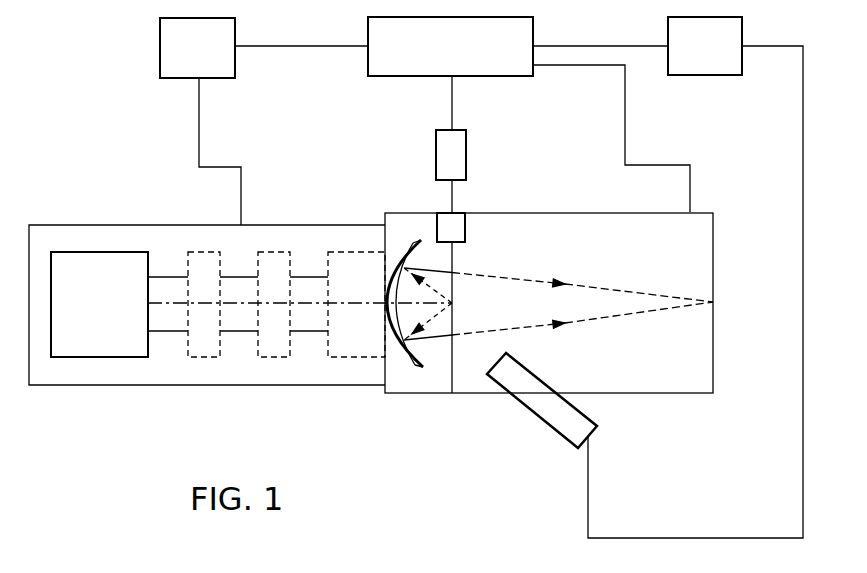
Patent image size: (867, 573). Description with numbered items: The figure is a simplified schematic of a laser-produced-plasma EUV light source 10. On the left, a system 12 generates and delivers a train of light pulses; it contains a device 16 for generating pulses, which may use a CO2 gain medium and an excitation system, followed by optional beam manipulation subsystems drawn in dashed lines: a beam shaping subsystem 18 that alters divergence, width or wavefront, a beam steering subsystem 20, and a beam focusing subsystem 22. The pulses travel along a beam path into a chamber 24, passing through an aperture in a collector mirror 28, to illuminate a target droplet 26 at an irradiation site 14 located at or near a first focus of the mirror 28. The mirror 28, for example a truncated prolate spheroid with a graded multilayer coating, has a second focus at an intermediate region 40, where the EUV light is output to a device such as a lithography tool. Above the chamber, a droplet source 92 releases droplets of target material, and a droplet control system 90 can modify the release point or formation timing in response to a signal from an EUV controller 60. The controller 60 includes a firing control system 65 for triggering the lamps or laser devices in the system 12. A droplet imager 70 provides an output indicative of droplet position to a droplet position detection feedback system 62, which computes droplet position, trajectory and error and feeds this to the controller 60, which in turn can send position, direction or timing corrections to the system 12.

The EUV light source 10 is at (378, 410).
The system for generating and delivering a train of light pulses 12 is at (80, 225).
The irradiation site 14 is at (452, 303).
The device for generating pulses 16 is at (87, 317).
The beam shaping subsystem 18 is at (203, 357).
The beam steering subsystem 20 is at (273, 357).
The beam focusing subsystem 22 is at (357, 357).
The chamber 24 is at (621, 262).
The target droplet 26 is at (452, 284).
The mirror 28 is at (402, 250).
The intermediate region 40 is at (713, 302).
The EUV controller 60 is at (439, 59).
The droplet position detection feedback system 62 is at (693, 59).
The firing control system 65 is at (185, 59).
The droplet imager 70 is at (525, 405).
The droplet control system 90 is at (436, 148).
The droplet source 92 is at (465, 228).